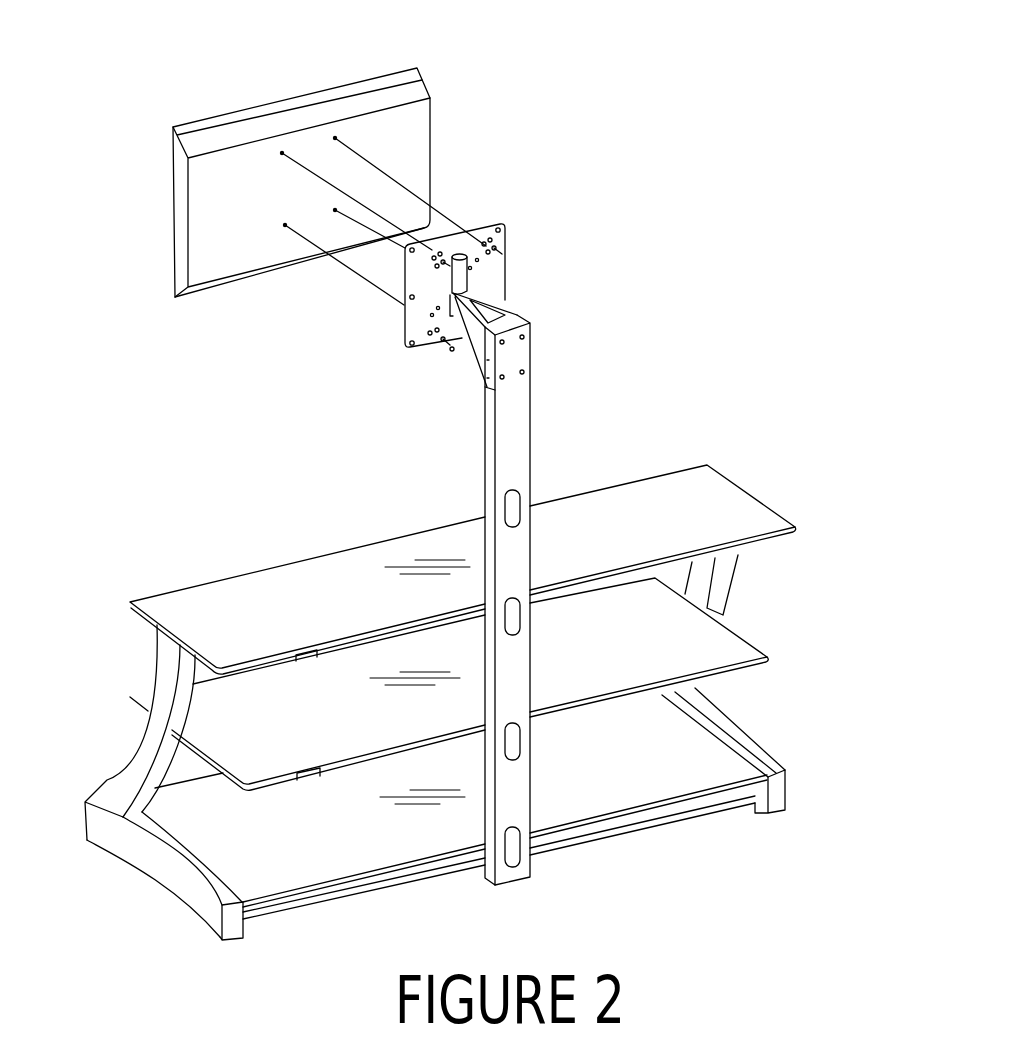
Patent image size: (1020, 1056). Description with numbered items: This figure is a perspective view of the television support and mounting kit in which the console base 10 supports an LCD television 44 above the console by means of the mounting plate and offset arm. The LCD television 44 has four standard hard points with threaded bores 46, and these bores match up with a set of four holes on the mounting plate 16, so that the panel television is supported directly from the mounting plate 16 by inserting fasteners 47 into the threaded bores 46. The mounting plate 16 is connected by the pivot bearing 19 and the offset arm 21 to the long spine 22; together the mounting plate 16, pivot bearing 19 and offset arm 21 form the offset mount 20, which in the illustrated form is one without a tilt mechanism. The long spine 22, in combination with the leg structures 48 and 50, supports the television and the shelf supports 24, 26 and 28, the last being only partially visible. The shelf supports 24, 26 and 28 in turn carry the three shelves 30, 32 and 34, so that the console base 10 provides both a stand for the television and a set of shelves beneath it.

The console base 10 is at (745, 737).
The mounting plate 16 is at (505, 240).
The pivot bearing 19 is at (476, 287).
The offset mount 20 is at (468, 368).
The offset arm 21 is at (500, 311).
The long spine 22 is at (508, 438).
The shelf support 24 is at (642, 573).
The shelf support 26 is at (641, 698).
The shelf support 28 is at (690, 806).
The shelf 30 is at (463, 569).
The shelf 32 is at (449, 684).
The shelf 34 is at (461, 840).
The LCD television 44 is at (196, 223).
The threaded bores 46 is at (282, 150).
The fasteners 47 is at (505, 262).
The leg structure 48 is at (144, 864).
The leg structure 50 is at (742, 559).